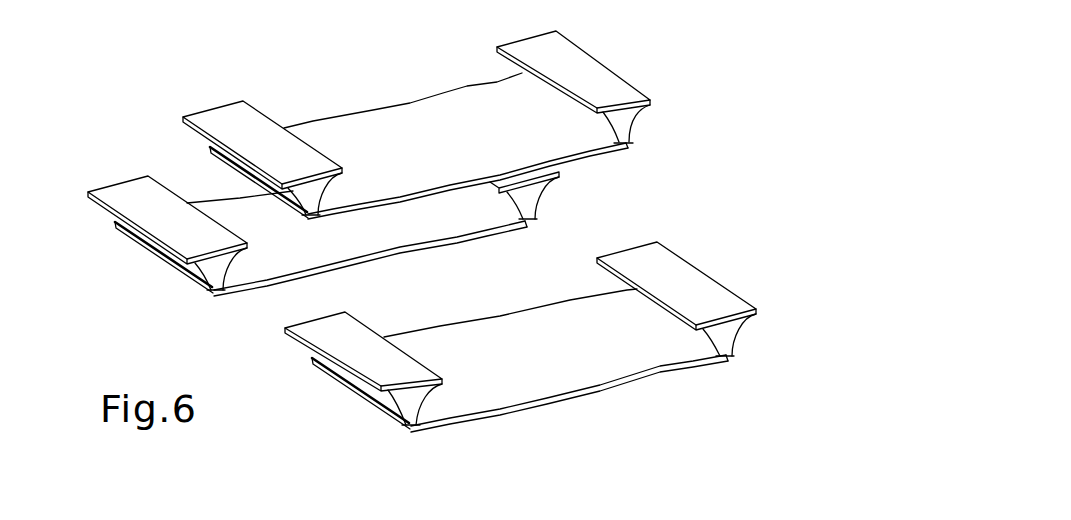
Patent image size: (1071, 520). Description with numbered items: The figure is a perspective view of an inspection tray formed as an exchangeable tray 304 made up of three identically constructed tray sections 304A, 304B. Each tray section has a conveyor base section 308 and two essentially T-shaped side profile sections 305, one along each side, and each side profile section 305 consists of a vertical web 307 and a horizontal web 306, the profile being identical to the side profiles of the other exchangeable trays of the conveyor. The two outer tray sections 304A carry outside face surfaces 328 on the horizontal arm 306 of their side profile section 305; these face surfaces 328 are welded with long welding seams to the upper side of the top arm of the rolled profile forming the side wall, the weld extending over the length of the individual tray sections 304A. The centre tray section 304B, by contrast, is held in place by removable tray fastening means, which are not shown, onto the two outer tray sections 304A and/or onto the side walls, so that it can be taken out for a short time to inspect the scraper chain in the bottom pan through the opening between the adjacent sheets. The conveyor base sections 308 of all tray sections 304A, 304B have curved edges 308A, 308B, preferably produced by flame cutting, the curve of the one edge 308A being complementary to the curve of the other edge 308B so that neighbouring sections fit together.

The exchangeable tray 304 is at (431, 259).
The outer tray section 304A is at (160, 286).
The centre tray section 304B is at (689, 82).
The side profile section 305 is at (625, 117).
The horizontal web 306 is at (649, 100).
The vertical web 307 is at (632, 136).
The conveyor base section 308 is at (417, 245).
The curved edge 308A is at (457, 188).
The curved edge 308B is at (373, 112).
The outside face surface 328 is at (147, 255).